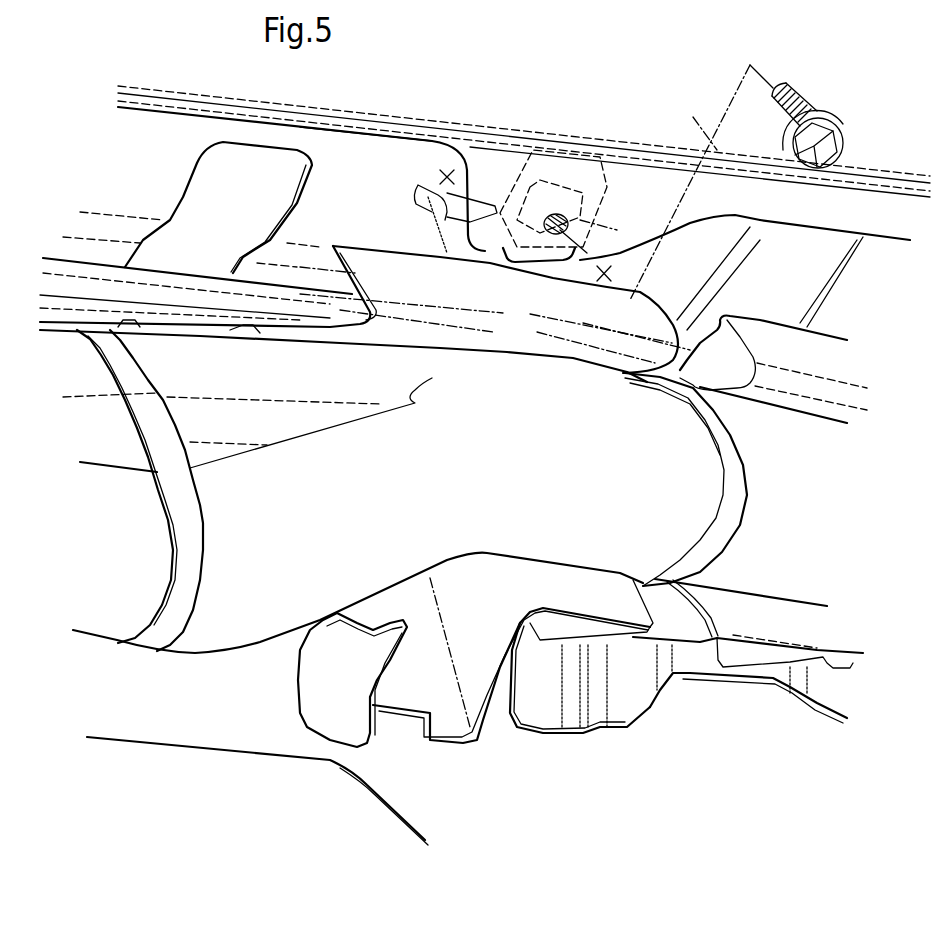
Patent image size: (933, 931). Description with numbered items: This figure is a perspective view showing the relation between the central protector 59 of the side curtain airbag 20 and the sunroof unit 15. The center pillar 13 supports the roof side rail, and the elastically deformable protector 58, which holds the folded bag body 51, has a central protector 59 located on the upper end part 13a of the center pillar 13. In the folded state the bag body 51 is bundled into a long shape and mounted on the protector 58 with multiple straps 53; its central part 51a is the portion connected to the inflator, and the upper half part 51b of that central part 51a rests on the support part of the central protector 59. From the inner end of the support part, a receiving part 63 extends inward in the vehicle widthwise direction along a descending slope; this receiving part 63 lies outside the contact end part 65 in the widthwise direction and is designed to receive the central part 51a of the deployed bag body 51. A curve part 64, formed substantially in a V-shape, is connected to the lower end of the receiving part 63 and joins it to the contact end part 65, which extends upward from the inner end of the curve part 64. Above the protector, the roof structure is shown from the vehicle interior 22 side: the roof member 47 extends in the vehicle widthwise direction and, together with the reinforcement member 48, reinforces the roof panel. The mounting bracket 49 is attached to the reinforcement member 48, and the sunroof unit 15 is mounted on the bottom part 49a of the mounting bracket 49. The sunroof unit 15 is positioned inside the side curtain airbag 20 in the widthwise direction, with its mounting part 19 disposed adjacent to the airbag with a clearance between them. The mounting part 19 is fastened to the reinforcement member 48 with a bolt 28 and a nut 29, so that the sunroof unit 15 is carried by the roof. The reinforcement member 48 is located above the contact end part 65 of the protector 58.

The center pillar 13 is at (209, 653).
The upper end part 13a is at (385, 788).
The sunroof unit 15 is at (738, 163).
The mounting part 19 is at (620, 243).
The side curtain airbag 20 is at (303, 296).
The vehicle interior 22 is at (641, 503).
The bolt 28 is at (835, 146).
The nut 29 is at (557, 180).
The roof member 47 is at (823, 267).
The reinforcement member 48 is at (397, 220).
The mounting bracket 49 is at (514, 290).
The bottom part 49a is at (555, 279).
The bag body 51 is at (797, 588).
The central part 51a is at (503, 530).
The upper half part 51b is at (447, 360).
The straps 53 is at (183, 497).
The protector 58 is at (364, 226).
The central protector 59 is at (440, 193).
The receiving part 63 is at (370, 343).
The curve part 64 is at (546, 340).
The contact end part 65 is at (489, 250).